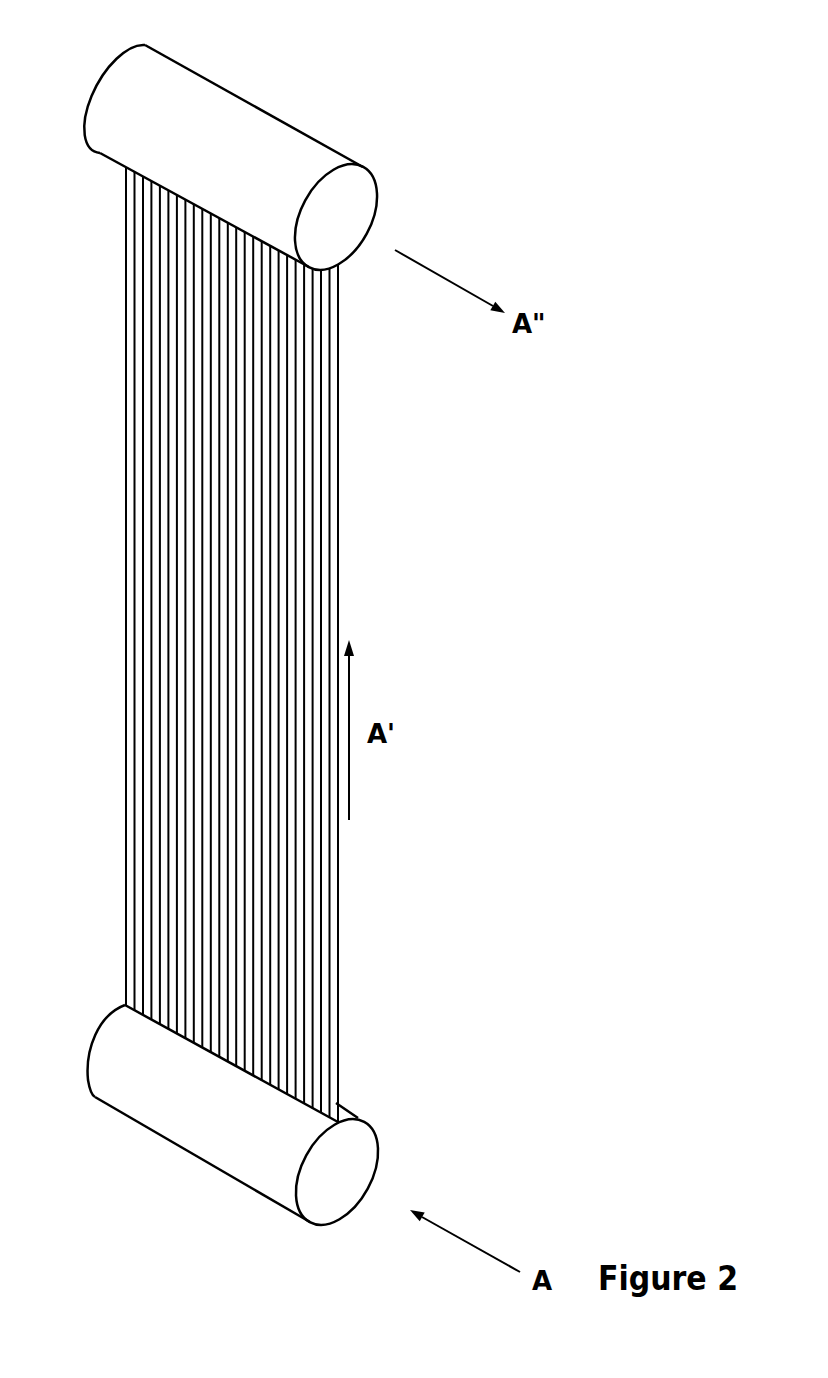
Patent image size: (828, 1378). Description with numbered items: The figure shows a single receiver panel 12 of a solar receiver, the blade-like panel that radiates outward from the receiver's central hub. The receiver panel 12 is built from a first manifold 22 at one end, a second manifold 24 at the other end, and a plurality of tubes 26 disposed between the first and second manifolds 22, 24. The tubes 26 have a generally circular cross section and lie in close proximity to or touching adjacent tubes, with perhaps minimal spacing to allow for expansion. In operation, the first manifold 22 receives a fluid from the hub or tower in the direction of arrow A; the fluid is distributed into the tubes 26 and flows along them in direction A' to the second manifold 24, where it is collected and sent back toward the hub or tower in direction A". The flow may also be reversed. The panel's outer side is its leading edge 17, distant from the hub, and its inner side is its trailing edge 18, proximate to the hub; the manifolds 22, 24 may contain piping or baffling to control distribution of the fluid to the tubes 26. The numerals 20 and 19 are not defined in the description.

The receiver panel 12 is at (342, 47).
The upper roller 20 is at (334, 142).
The second manifold 24 is at (242, 95).
The first manifold 22 is at (205, 1162).
The tubes 26 is at (115, 739).
The leading edge 17 is at (127, 875).
The trailing edge 18 is at (338, 888).
The intermediate strands 19 is at (175, 965).